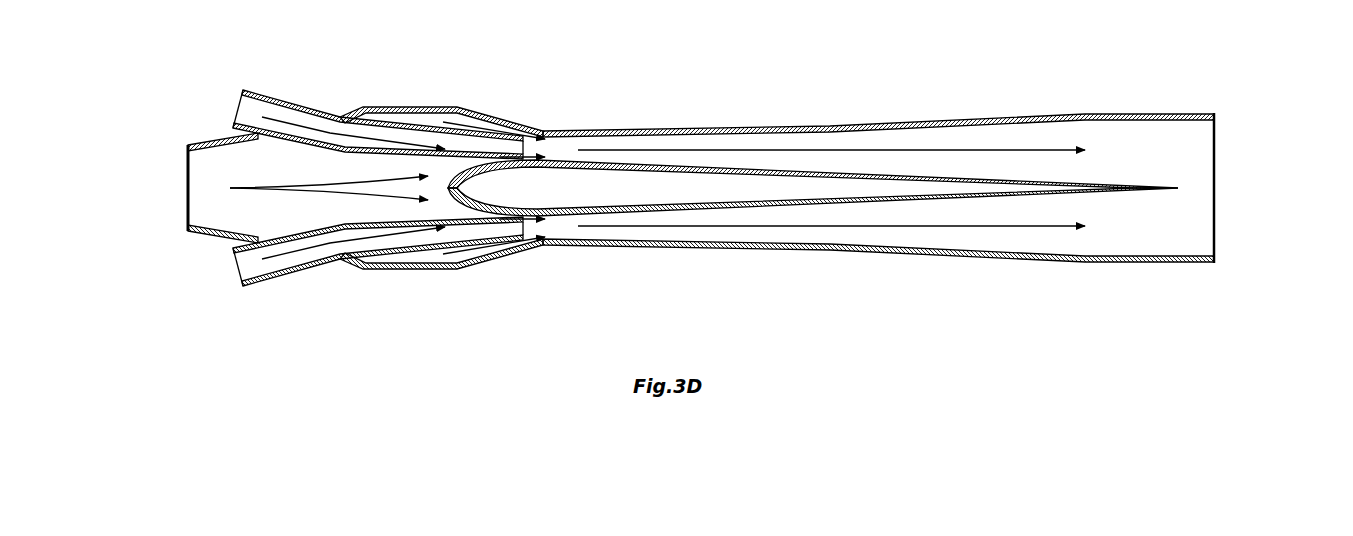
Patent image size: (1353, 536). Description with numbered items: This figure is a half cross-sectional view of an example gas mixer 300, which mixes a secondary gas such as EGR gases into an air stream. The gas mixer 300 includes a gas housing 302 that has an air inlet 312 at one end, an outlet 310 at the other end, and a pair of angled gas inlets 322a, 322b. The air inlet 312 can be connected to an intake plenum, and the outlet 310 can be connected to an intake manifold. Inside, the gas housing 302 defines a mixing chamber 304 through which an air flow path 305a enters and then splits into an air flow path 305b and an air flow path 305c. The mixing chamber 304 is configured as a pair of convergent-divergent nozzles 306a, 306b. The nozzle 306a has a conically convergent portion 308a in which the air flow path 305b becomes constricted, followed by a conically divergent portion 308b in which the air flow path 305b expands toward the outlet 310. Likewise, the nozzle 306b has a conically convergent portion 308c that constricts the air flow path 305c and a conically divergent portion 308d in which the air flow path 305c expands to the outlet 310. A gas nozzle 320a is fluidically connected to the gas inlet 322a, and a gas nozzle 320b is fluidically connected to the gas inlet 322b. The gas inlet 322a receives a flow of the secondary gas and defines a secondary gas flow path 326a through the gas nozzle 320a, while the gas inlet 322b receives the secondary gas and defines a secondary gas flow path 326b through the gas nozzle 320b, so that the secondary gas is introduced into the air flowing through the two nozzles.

The gas mixer 300 is at (777, 136).
The gas housing 302 is at (622, 130).
The mixing chamber 304 is at (878, 133).
The air flow path 305a is at (253, 187).
The air flow path 305b is at (1062, 152).
The air flow path 305c is at (1062, 224).
The convergent-divergent nozzle 306a is at (1214, 52).
The convergent-divergent nozzle 306b is at (1214, 324).
The conically convergent portion 308a is at (562, 87).
The conically divergent portion 308b is at (1040, 92).
The conically convergent portion 308c is at (562, 289).
The conically divergent portion 308d is at (1040, 284).
The outlet 310 is at (1218, 189).
The air inlet 312 is at (183, 197).
The gas nozzle 320a is at (467, 138).
The gas nozzle 320b is at (467, 238).
The gas inlet 322a is at (360, 107).
The gas inlet 322b is at (360, 269).
The secondary gas flow path 326a is at (292, 124).
The secondary gas flow path 326b is at (292, 252).